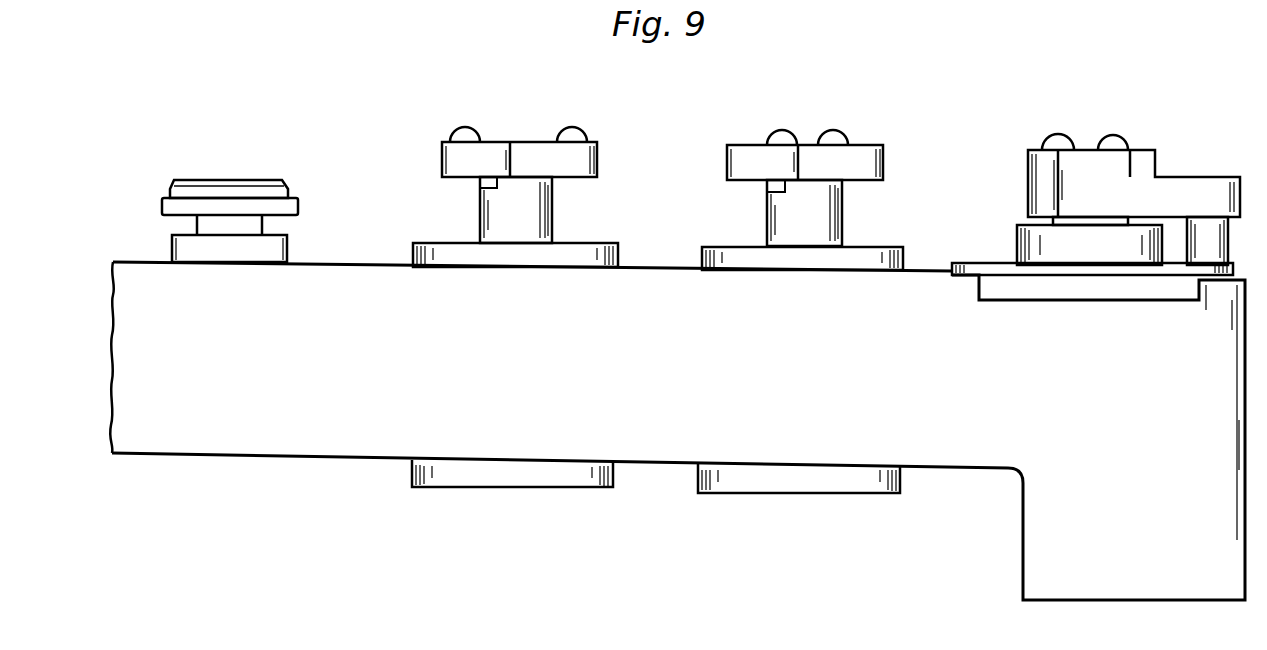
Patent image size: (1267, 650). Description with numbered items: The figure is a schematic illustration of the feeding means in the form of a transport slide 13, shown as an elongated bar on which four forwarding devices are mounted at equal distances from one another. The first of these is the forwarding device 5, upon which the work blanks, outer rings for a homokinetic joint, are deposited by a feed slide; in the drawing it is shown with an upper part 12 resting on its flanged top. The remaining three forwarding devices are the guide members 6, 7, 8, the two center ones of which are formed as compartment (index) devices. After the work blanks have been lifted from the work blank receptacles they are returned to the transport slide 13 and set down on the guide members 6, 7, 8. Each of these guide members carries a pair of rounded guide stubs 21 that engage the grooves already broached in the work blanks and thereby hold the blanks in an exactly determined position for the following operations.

The forwarding device 5 is at (230, 205).
The guide member 6 is at (524, 126).
The guide member 7 is at (812, 133).
The guide member 8 is at (1094, 133).
The cap 12 is at (200, 196).
The transport slide 13 is at (663, 425).
The guide stub 21 is at (466, 133).